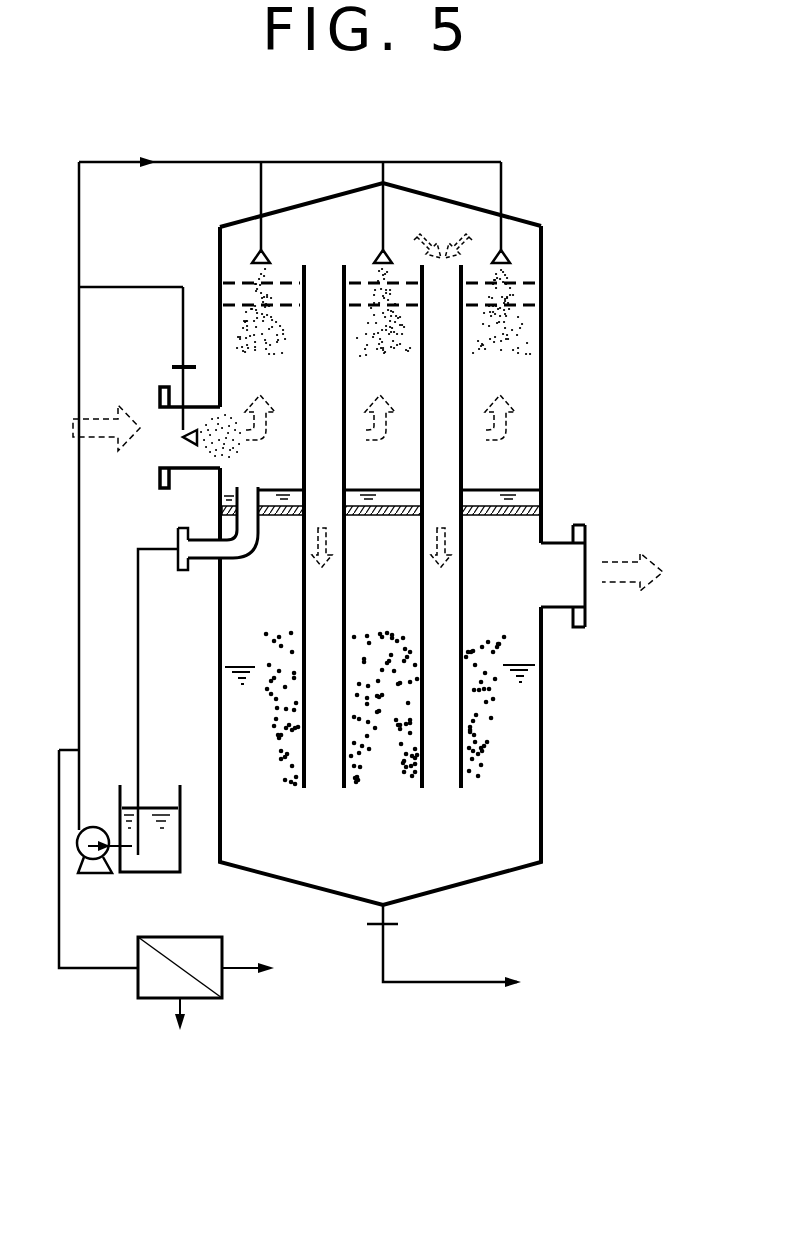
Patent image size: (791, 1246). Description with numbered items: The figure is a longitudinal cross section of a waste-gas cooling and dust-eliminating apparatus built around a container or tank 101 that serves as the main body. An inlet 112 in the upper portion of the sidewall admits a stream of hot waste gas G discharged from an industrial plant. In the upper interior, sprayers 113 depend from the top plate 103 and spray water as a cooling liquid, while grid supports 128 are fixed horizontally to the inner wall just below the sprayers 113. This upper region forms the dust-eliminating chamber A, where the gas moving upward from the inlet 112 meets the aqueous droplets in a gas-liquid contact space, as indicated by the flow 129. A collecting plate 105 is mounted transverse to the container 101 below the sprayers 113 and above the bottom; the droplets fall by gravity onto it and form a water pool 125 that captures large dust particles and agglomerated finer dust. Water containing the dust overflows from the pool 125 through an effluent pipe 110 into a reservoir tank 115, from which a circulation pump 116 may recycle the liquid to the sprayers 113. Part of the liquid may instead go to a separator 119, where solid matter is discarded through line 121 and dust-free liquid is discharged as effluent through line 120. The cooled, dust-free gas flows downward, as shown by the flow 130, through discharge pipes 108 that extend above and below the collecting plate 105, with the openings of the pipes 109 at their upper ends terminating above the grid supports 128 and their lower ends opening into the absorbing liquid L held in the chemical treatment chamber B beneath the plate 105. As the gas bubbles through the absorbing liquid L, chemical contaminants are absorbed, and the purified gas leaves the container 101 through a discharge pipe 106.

The container or tank 101 is at (545, 418).
The top plate 103 is at (435, 193).
The collecting plate 105 is at (528, 503).
The discharge pipe 106 is at (556, 608).
The discharge pipes 108 is at (304, 580).
The pipes 109 is at (462, 373).
The effluent pipe 110 is at (205, 563).
The inlet 112 is at (190, 470).
The sprayers 113 is at (511, 258).
The reservoir tank 115 is at (162, 873).
The circulation pump 116 is at (93, 874).
The separator 119 is at (138, 986).
The line 120 is at (272, 975).
The line 121 is at (185, 1033).
The water pool 125 is at (493, 488).
The grid supports 128 is at (523, 288).
The gas flow 129 is at (444, 250).
The liquid downflow 130 is at (452, 547).
The dust-eliminating chamber A is at (513, 330).
The chemical treatment chamber B is at (507, 593).
The gas inlet flow G is at (95, 428).
The absorbing liquid L is at (505, 857).